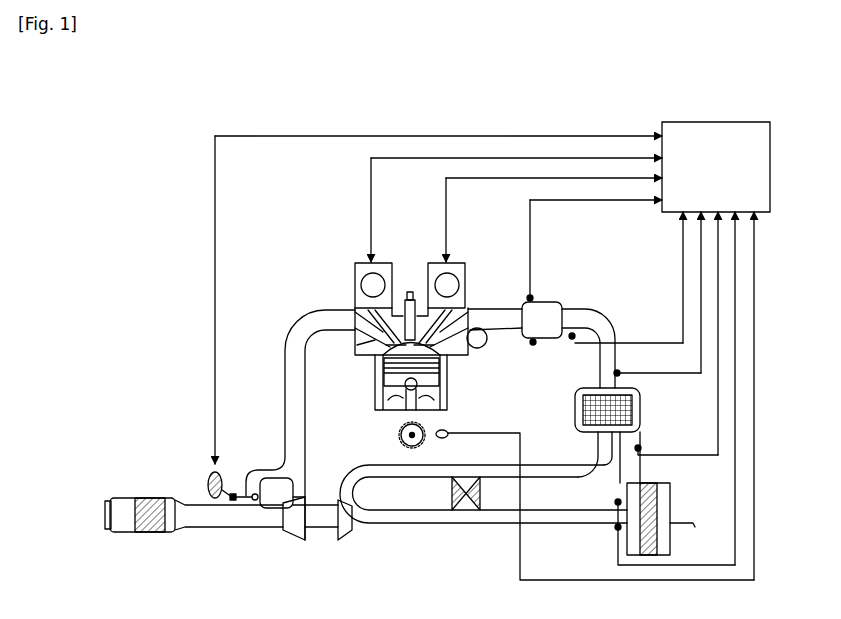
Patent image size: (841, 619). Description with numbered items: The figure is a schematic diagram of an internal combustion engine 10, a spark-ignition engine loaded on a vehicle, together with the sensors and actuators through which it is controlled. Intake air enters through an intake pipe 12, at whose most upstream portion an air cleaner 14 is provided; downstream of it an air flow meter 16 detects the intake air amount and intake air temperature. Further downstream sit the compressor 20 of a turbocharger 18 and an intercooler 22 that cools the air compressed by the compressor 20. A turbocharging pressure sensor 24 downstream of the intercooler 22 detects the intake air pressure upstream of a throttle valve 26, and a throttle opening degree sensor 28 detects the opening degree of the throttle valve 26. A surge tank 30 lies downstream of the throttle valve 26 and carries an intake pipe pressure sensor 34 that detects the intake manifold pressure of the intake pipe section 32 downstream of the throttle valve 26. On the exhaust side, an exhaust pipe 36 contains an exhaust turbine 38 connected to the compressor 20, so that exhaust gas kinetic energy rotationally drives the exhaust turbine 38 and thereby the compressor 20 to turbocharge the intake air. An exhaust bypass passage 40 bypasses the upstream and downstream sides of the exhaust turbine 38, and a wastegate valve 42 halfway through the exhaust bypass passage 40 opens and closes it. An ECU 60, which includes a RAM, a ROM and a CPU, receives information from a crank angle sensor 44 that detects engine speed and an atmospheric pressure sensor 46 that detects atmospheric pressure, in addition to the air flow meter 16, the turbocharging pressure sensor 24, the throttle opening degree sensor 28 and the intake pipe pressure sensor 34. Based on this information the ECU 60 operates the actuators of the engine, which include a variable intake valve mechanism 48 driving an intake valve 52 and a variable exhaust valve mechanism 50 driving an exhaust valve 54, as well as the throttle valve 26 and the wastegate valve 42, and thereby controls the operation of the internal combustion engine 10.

The internal combustion engine 10 is at (375, 380).
The intake pipe 12 is at (430, 523).
The air cleaner 14 is at (672, 497).
The air flow meter 16 is at (616, 529).
The turbocharger 18 is at (336, 540).
The compressor 20 is at (352, 530).
The intercooler 22 is at (640, 405).
The turbocharging pressure sensor 24 is at (620, 373).
The throttle valve 26 is at (588, 310).
The throttle opening degree sensor 28 is at (572, 339).
The surge tank 30 is at (545, 302).
The intake pipe section 32 is at (533, 345).
The intake pipe pressure sensor 34 is at (530, 296).
The exhaust pipe 36 is at (300, 325).
The exhaust turbine 38 is at (290, 542).
The exhaust bypass passage 40 is at (276, 478).
The wastegate valve 42 is at (224, 474).
The crank angle sensor 44 is at (452, 433).
The atmospheric pressure sensor 46 is at (615, 502).
The variable intake valve mechanism 48 is at (440, 264).
The variable exhaust valve mechanism 50 is at (365, 262).
The intake valve 52 is at (468, 312).
The exhaust valve 54 is at (357, 345).
The ECU 60 is at (708, 122).